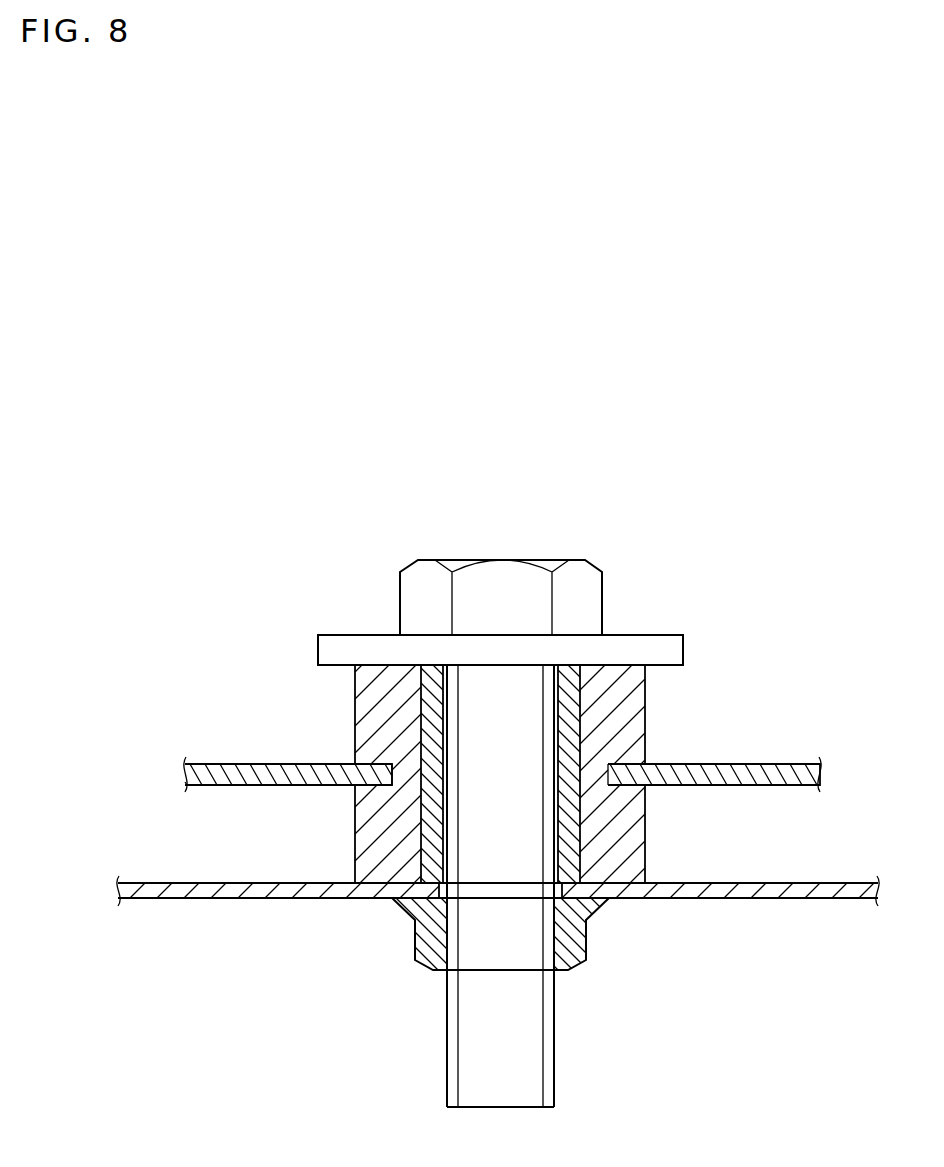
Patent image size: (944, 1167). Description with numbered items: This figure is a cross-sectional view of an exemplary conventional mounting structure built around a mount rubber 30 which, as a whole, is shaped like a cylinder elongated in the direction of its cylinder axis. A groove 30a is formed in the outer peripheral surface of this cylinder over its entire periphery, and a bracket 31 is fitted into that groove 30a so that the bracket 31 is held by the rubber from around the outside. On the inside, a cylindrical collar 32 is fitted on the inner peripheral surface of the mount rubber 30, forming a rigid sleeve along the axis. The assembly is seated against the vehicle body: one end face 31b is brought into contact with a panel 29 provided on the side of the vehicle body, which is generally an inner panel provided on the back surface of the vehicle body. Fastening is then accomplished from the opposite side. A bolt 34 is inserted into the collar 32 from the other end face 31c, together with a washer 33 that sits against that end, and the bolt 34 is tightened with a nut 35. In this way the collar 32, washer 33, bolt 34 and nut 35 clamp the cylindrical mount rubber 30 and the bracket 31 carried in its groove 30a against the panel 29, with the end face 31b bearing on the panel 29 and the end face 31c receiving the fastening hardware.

The panel 29 is at (798, 895).
The mount rubber 30 is at (673, 718).
The groove 30a is at (612, 783).
The bracket 31 is at (737, 772).
The end face 31b is at (392, 898).
The other end face 31c is at (380, 664).
The cylindrical collar 32 is at (567, 697).
The washer 33 is at (670, 647).
The bolt 34 is at (502, 583).
The nut 35 is at (575, 940).